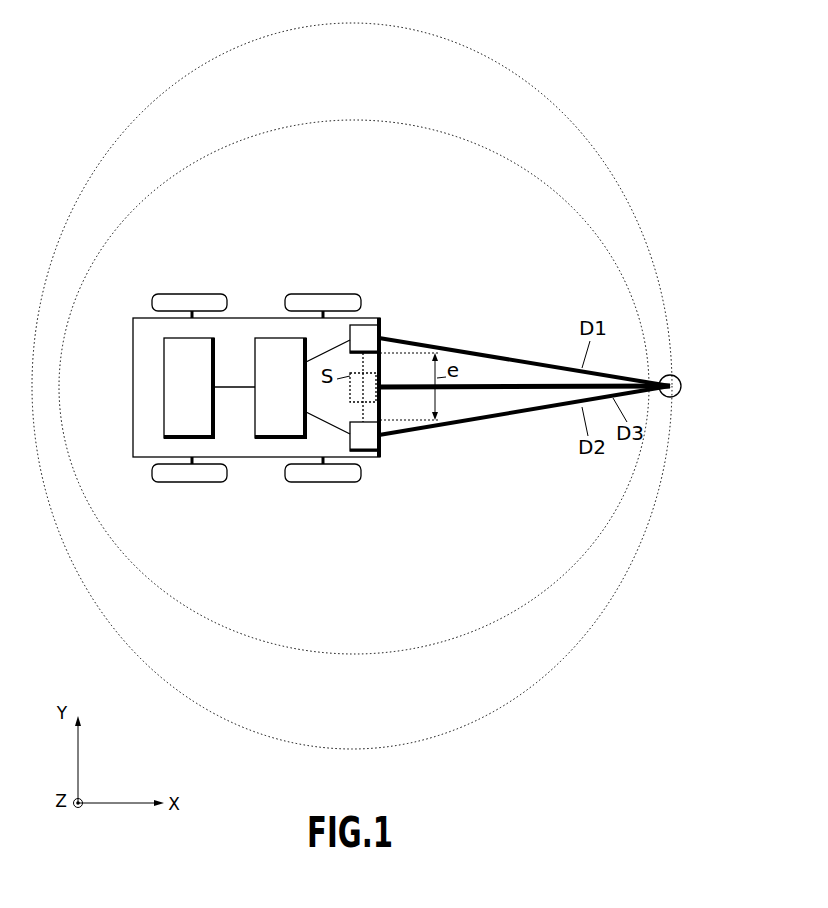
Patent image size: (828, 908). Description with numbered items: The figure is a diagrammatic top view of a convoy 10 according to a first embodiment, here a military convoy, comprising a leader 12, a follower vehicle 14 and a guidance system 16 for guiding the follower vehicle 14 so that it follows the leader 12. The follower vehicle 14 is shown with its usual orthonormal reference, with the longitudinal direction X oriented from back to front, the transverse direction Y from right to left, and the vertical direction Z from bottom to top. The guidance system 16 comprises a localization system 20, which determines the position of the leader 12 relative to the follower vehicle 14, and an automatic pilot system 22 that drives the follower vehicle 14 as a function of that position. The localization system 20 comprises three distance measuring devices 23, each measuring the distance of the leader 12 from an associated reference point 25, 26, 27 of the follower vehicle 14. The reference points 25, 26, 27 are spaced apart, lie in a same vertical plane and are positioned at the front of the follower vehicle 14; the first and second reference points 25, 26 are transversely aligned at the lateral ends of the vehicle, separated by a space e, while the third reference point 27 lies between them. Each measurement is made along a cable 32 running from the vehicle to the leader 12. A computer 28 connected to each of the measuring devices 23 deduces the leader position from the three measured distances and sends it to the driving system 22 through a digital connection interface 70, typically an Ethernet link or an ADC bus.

The convoy 10 is at (352, 381).
The leader 12 is at (681, 396).
The follower vehicle 14 is at (256, 322).
The guidance system 16 is at (255, 318).
The localization system 20 is at (257, 456).
The automatic pilot system 22 is at (164, 425).
The distance measuring devices 23 is at (360, 326).
The first reference point 25 is at (383, 336).
The second reference point 26 is at (383, 438).
The third reference point 27 is at (378, 393).
The computer 28 is at (302, 388).
The cable 32 is at (510, 387).
The digital connection interface 70 is at (233, 382).